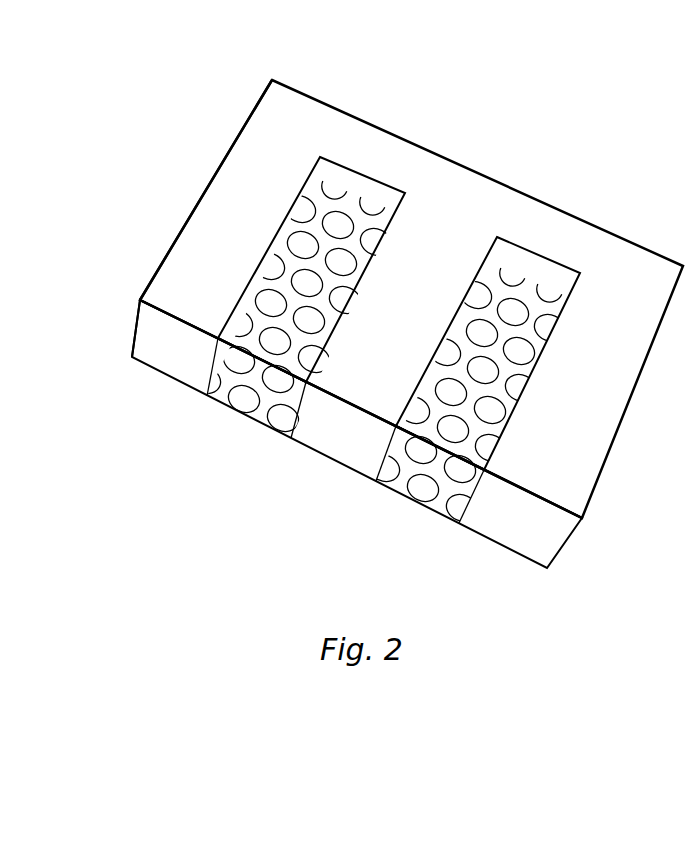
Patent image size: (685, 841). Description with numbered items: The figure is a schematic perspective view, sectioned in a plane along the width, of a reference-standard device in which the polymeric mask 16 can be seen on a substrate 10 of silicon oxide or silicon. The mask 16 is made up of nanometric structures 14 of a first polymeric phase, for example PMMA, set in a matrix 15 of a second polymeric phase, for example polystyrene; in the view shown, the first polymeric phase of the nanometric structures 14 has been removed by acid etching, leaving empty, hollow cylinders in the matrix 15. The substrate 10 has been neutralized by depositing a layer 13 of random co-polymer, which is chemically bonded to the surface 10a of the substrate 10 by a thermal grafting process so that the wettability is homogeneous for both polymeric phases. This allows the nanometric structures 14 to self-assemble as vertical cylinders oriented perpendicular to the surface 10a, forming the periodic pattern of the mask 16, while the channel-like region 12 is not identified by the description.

The substrate 10 is at (407, 322).
The surface of the substrate 10a is at (140, 305).
The first channel 12 is at (304, 243).
The layer of RCP 13 is at (143, 298).
The nanometric structures 14 is at (276, 302).
The matrix 15 is at (400, 503).
The polymeric mask 16 is at (488, 276).